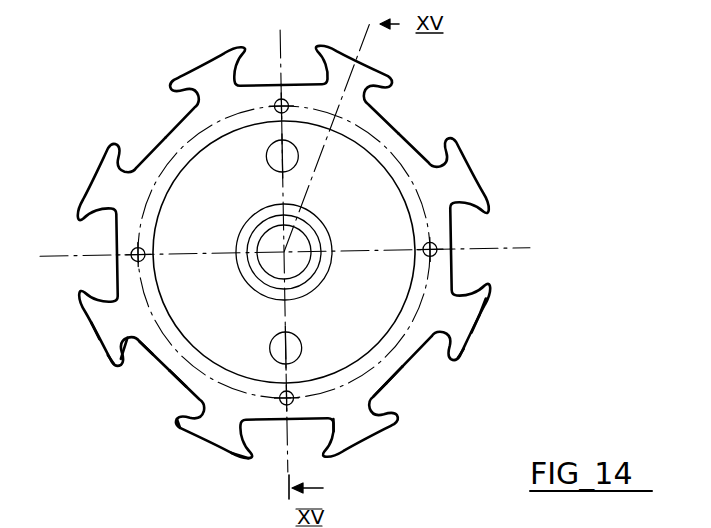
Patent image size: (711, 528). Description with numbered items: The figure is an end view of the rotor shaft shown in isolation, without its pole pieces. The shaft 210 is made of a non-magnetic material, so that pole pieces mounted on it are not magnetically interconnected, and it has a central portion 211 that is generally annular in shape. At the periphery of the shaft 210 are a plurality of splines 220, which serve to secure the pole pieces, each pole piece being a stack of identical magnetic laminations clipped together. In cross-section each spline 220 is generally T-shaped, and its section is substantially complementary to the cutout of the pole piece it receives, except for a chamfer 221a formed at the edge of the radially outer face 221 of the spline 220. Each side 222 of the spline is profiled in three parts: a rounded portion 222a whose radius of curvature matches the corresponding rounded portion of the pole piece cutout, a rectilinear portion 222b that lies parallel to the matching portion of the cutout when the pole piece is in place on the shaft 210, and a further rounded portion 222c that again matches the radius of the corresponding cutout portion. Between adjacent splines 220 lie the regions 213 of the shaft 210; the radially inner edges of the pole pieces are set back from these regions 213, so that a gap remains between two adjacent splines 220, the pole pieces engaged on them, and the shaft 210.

The non-magnetic shaft 210 is at (163, 167).
The central portion 211 is at (181, 352).
The regions of the shaft between the splines 213 is at (318, 420).
The spline 220 is at (98, 327).
The radially outer face 221 is at (471, 337).
The chamfer 221a is at (494, 291).
The side of the spline 222 is at (171, 430).
The rounded portion 222a is at (103, 345).
The rectilinear portion 222b is at (118, 390).
The rounded portion 222c is at (112, 375).